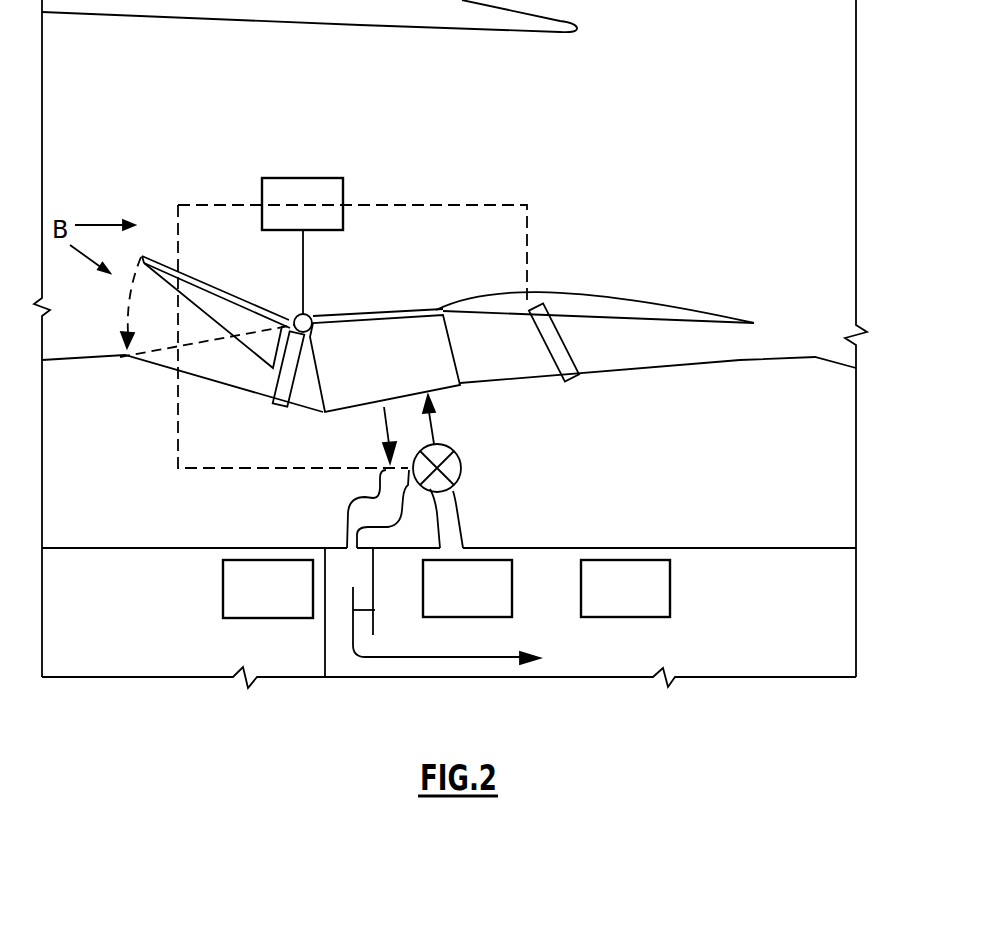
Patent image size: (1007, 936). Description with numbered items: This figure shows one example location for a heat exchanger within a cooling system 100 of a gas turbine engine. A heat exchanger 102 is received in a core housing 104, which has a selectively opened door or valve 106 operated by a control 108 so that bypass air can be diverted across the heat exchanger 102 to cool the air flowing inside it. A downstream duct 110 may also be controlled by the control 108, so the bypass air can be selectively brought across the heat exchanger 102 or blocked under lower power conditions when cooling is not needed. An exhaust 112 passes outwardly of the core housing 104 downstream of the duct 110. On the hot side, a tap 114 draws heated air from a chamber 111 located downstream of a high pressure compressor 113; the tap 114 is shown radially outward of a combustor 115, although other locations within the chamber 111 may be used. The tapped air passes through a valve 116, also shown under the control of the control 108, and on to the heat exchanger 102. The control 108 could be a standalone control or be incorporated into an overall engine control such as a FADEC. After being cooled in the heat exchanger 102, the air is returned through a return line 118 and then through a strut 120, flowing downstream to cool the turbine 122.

The cooling system 100 is at (870, 87).
The heat exchanger 102 is at (385, 337).
The core housing 104 is at (100, 360).
The door or valve 106 is at (228, 297).
The control 108 is at (343, 195).
The downstream duct 110 is at (548, 337).
The chamber 111 is at (392, 587).
The exhaust 112 is at (762, 347).
The high pressure compressor 113 is at (253, 588).
The tap 114 is at (448, 502).
The combustor 115 is at (448, 595).
The valve 116 is at (442, 445).
The return line 118 is at (347, 528).
The strut 120 is at (375, 610).
The turbine 122 is at (625, 595).